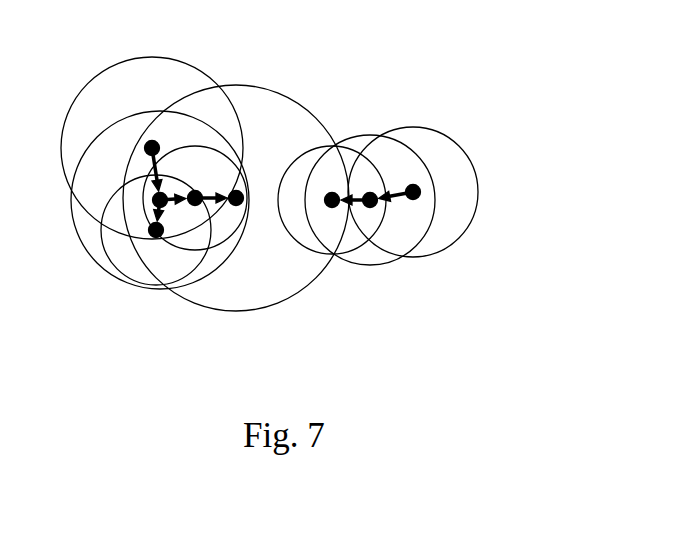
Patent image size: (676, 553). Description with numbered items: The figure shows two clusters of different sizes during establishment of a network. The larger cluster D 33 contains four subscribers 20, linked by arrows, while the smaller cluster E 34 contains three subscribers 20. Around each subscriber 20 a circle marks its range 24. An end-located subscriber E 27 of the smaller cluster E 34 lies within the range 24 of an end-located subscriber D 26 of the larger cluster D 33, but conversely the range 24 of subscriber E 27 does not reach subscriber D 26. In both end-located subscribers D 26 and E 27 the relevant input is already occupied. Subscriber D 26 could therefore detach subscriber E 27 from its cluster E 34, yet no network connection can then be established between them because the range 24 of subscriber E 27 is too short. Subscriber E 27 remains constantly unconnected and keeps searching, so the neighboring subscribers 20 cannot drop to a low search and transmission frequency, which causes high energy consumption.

The subscriber 20 is at (496, 34).
The range 24 is at (309, 252).
The end-located subscriber D 26 is at (237, 192).
The end-located subscriber E 27 is at (331, 194).
The cluster D 33 is at (196, 192).
The cluster E 34 is at (369, 194).